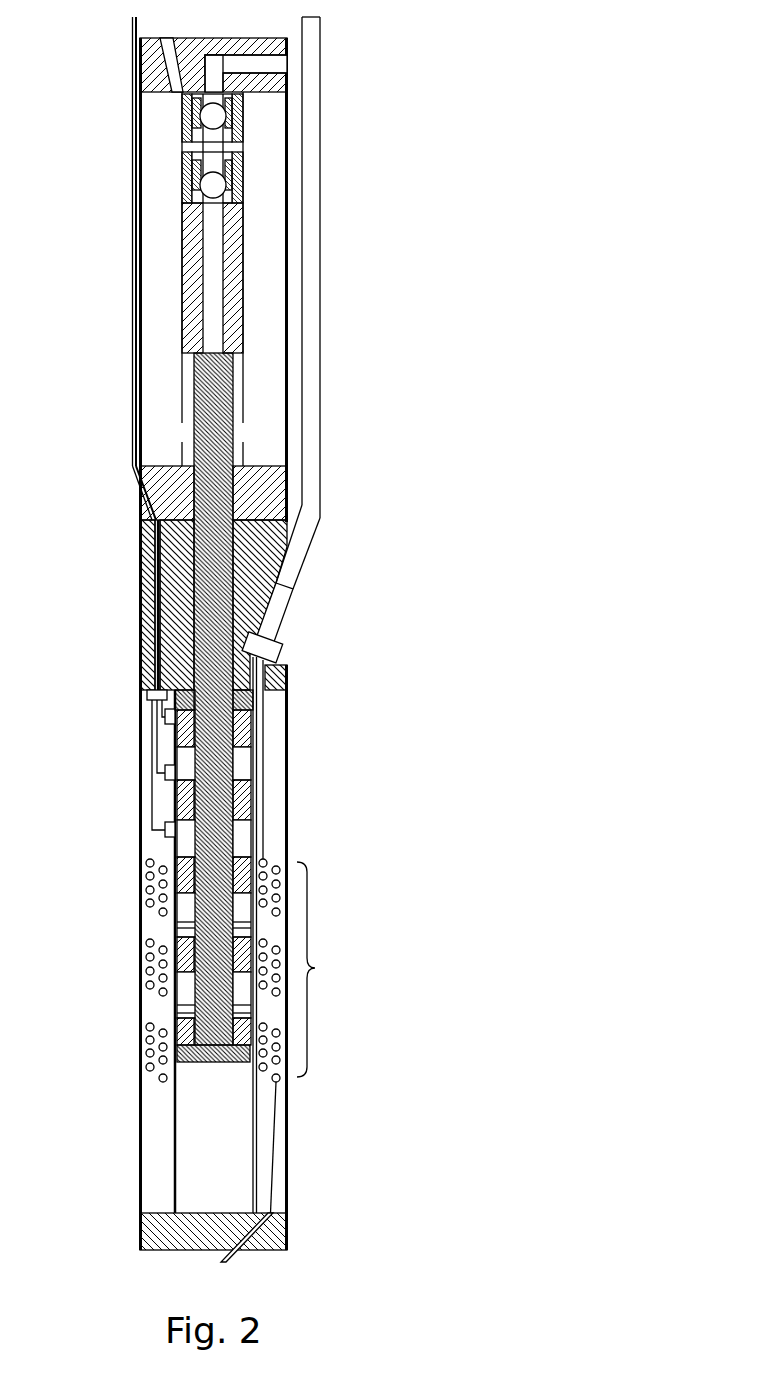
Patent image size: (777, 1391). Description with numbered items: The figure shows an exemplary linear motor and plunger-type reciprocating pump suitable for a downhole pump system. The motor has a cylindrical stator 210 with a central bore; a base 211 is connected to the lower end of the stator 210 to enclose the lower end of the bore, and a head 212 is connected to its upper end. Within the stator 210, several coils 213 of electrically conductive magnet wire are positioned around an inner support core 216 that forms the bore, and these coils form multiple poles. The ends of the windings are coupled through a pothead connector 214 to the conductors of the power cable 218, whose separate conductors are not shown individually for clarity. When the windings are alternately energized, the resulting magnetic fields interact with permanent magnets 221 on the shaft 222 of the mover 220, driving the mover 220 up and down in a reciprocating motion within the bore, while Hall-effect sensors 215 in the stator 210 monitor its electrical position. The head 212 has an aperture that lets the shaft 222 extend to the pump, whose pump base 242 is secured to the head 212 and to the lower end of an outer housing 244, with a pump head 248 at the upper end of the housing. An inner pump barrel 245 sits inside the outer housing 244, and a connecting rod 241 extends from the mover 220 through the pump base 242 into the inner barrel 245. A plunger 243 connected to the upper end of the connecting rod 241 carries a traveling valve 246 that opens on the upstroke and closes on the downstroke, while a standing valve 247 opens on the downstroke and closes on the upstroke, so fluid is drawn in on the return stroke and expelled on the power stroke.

The stator 210 is at (138, 807).
The base 211 is at (288, 1232).
The head 212 is at (138, 573).
The coils 213 is at (315, 968).
The pothead connector 214 is at (283, 633).
The Hall-effect sensors 215 is at (175, 727).
The inner support core 216 is at (173, 858).
The power cable 218 is at (313, 547).
The mover 220 is at (192, 1070).
The permanent magnets 221 is at (253, 800).
The shaft 222 is at (175, 757).
The connecting rod 241 is at (233, 412).
The pump base 242 is at (138, 503).
The plunger 243 is at (243, 302).
The outer housing 244 is at (290, 259).
The inner pump barrel 245 is at (217, 233).
The traveling valve 246 is at (168, 180).
The standing valve 247 is at (170, 128).
The pump head 248 is at (287, 52).